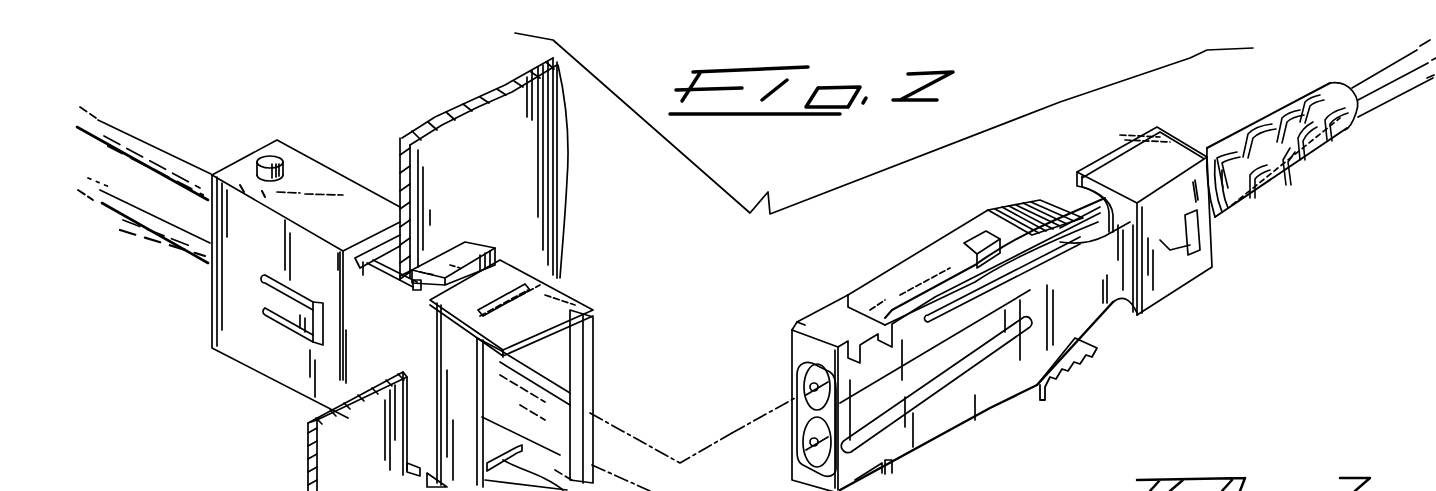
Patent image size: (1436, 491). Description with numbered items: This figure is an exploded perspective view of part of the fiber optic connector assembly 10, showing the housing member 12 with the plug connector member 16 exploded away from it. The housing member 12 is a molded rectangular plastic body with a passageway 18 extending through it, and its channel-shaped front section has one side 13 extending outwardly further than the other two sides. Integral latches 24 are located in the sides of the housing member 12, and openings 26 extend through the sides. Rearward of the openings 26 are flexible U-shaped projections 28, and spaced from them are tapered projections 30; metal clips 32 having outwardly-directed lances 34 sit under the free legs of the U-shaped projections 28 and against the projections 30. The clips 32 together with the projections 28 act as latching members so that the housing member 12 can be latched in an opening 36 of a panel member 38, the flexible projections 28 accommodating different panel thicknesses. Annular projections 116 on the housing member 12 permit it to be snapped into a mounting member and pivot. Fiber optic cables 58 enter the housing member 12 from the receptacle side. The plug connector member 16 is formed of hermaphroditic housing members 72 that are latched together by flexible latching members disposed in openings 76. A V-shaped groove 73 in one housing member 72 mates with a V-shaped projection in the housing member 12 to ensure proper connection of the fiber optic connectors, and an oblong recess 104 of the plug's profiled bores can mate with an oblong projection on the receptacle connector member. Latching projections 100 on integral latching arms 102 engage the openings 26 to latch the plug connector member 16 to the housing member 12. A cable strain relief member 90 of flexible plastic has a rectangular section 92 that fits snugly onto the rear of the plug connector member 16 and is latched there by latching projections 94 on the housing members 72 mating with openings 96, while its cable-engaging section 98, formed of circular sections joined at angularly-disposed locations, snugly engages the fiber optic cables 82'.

The fiber optic connector assembly 10 is at (724, 300).
The housing member 12 is at (350, 177).
The side 13 is at (587, 311).
The plug connector member 16 is at (915, 252).
The passageway 18 is at (513, 397).
The integral latches 24 is at (295, 313).
The openings 26 is at (517, 283).
The U-shaped projections 28 is at (475, 238).
The projections 30 is at (375, 248).
The metal clips 32 is at (378, 268).
The lances 34 is at (393, 258).
The opening 36 is at (413, 408).
The panel member 38 is at (557, 158).
The fiber optic cables 58 is at (166, 150).
The hermaphroditic housing members 72 is at (882, 287).
The V-shaped groove 73 is at (924, 380).
The openings 76 is at (895, 471).
The fiber optic cables 82' is at (1394, 111).
The cable strain relief member 90 is at (1206, 282).
The rectangular section 92 is at (1125, 150).
The latching projections 94 is at (1192, 238).
The openings 96 is at (1195, 238).
The cable-engaging section 98 is at (1277, 175).
The latching projections 100 is at (976, 233).
The integral latching arms 102 is at (1025, 202).
The oblong recess 104 is at (790, 450).
The annular projections 116 is at (278, 156).